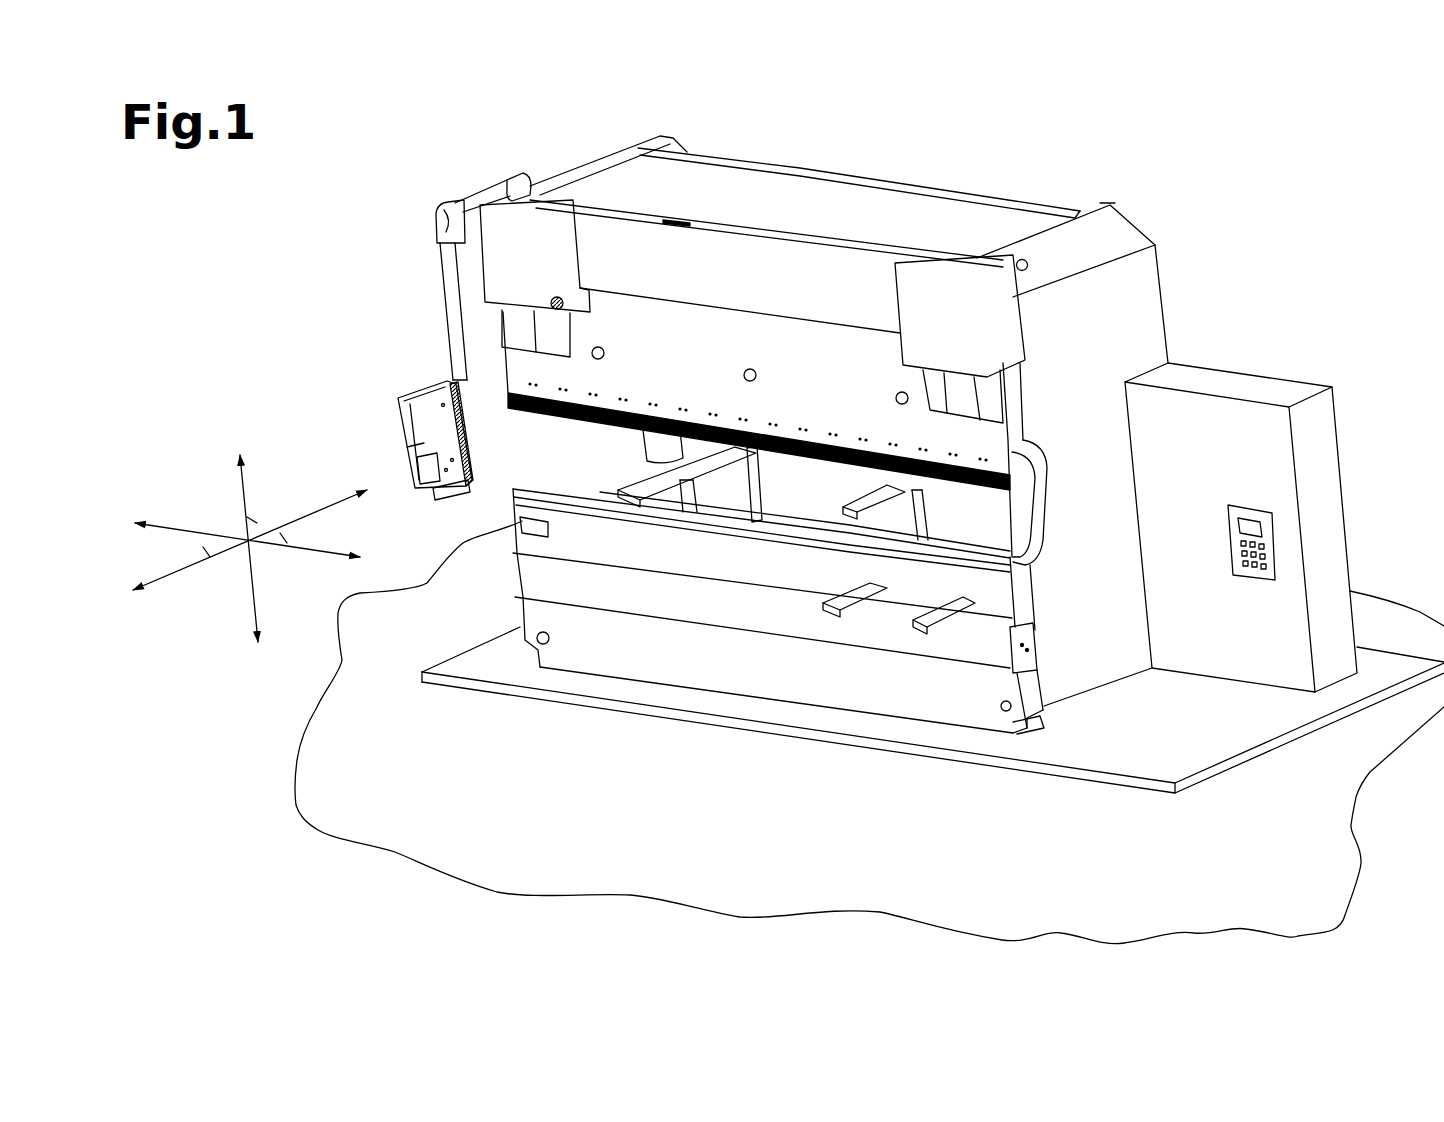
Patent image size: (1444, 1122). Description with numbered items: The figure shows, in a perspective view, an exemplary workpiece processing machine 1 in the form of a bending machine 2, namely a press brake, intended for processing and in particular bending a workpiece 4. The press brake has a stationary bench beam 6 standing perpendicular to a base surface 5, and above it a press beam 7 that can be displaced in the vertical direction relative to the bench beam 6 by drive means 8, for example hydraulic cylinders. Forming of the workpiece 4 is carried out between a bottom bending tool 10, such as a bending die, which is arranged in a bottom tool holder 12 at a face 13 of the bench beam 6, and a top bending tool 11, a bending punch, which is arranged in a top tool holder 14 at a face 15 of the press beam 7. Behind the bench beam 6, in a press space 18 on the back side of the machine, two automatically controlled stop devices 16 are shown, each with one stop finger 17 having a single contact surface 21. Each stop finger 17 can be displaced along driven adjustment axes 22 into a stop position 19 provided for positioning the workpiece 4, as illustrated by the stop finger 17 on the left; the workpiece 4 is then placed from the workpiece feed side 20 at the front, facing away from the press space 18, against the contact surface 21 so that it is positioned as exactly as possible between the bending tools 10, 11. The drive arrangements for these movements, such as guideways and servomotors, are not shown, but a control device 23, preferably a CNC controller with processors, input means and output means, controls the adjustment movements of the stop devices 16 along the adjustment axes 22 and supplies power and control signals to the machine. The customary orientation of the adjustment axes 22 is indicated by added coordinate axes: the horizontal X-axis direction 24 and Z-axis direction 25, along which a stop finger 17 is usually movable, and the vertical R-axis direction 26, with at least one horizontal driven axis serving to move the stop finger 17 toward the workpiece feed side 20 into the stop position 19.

The workpiece processing machine 1 is at (1162, 158).
The bending machine 2 is at (1263, 263).
The workpiece 4 is at (622, 483).
The base surface 5 is at (1313, 802).
The bench beam 6 is at (1000, 700).
The press beam 7 is at (522, 378).
The drive means 8 is at (1016, 297).
The bottom bending tool 10 is at (660, 507).
The top bending tool 11 is at (655, 425).
The bottom tool holder 12 is at (612, 485).
The face of the bench beam 13 is at (947, 555).
The top tool holder 14 is at (1010, 542).
The face of the press beam 15 is at (843, 480).
The stop device 16 is at (858, 481).
The stop finger 17 is at (713, 490).
The press space 18 is at (1010, 503).
The stop position 19 is at (590, 488).
The workpiece feed side 20 is at (569, 455).
The contact surface 21 is at (848, 500).
The adjustment axes 22 is at (247, 510).
The control device 23 is at (1270, 490).
The X-axis direction 24 is at (217, 557).
The Z-axis direction 25 is at (272, 543).
The R-axis direction 26 is at (250, 517).